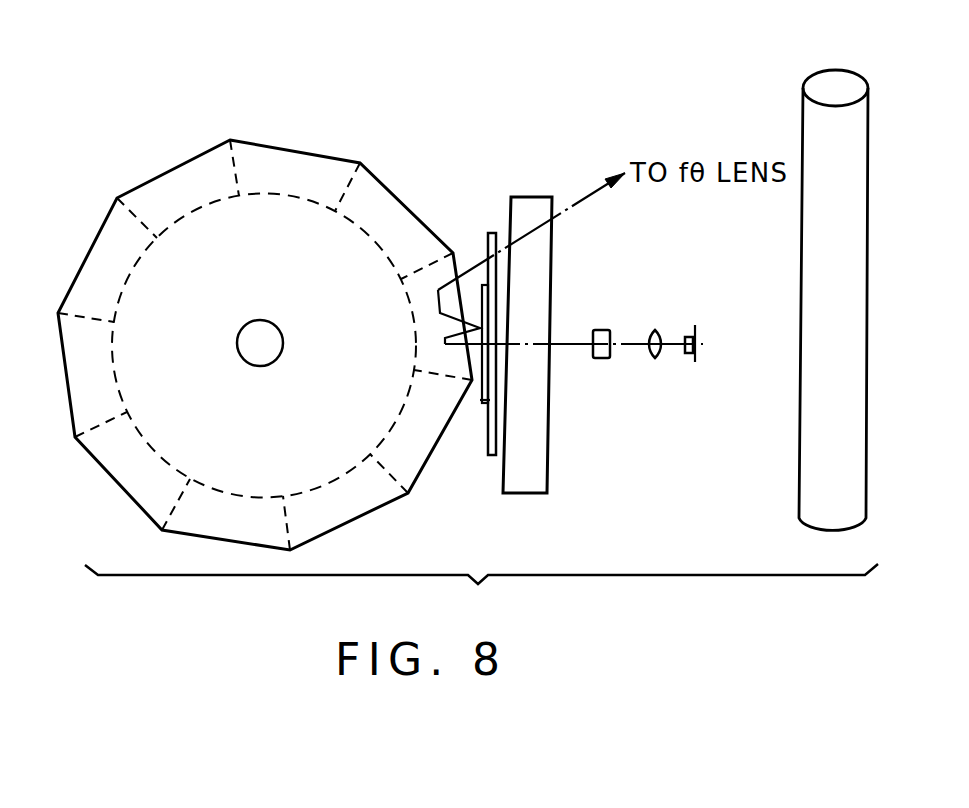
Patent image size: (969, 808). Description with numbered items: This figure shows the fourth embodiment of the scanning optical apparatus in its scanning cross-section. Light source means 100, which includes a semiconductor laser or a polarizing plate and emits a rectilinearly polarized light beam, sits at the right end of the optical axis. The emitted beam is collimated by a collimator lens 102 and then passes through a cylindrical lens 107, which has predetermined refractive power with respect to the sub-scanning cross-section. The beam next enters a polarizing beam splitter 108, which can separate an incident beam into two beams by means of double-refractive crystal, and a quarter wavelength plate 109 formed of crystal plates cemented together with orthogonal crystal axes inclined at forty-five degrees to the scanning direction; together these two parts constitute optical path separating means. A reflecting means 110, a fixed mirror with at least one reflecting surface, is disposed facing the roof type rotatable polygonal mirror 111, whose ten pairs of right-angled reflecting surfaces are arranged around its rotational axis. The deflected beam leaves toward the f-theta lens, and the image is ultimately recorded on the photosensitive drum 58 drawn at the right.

The roof type rotatable polygonal mirror 111 is at (383, 197).
The quarter wavelength plate 109 is at (491, 233).
The reflecting means 110 is at (485, 403).
The polarizing beam splitter 108 is at (533, 197).
The cylindrical lens 107 is at (600, 358).
The collimator lens 102 is at (655, 358).
The light source means 100 is at (695, 362).
The photosensitive drum 58 is at (822, 88).